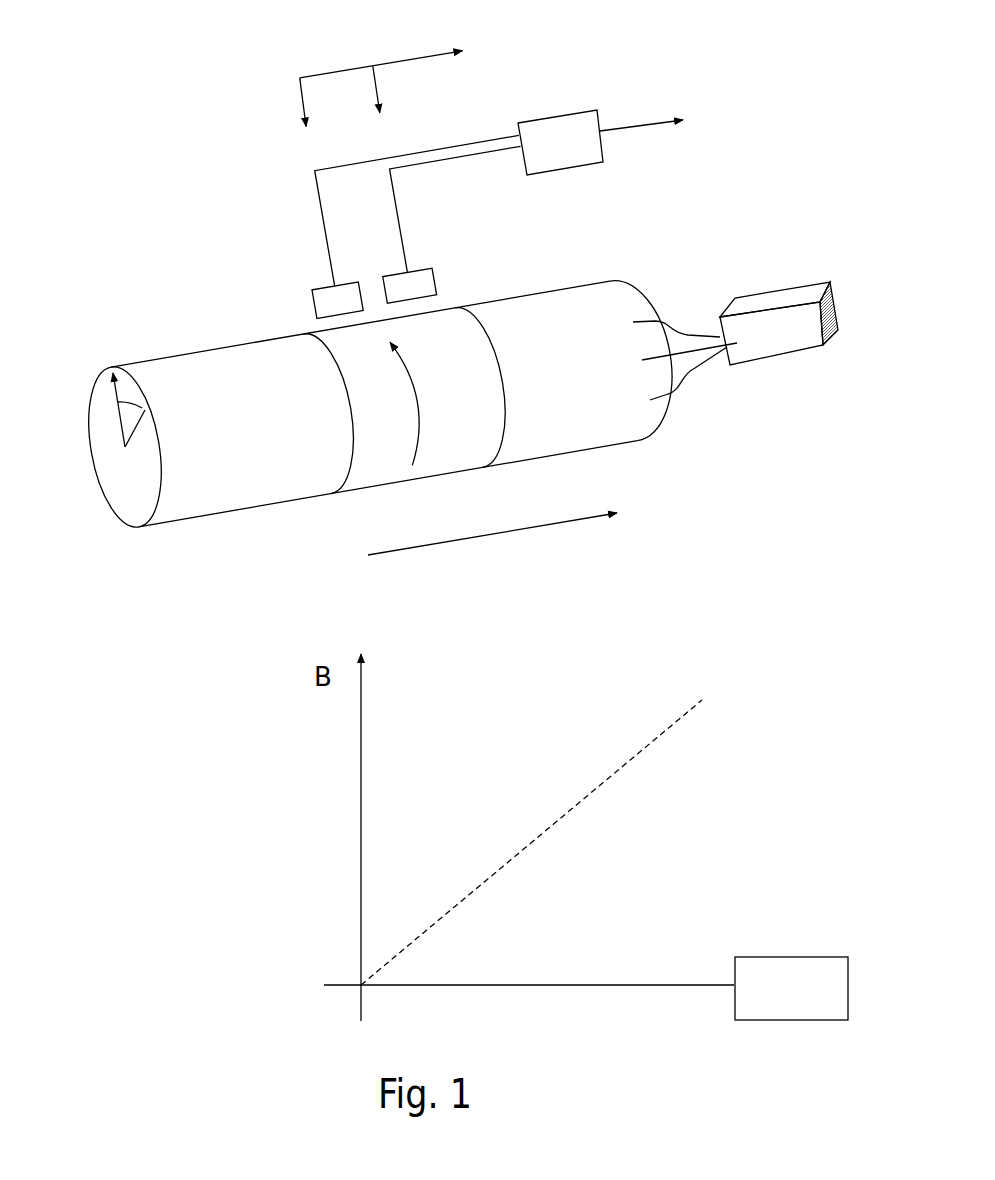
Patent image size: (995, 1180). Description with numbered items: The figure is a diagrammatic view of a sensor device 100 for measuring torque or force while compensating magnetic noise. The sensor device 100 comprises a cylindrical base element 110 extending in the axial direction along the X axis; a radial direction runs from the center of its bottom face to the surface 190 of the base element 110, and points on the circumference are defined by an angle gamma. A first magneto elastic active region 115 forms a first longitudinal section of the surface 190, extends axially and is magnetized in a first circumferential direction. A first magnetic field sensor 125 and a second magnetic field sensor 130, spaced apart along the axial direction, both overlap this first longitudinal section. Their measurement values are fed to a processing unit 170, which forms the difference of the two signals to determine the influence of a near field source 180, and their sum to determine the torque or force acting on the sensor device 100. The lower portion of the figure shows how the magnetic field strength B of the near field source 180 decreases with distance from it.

The sensor device 100 is at (72, 326).
The base element 110 is at (215, 510).
The first magneto elastic active region 115 is at (385, 482).
The first magnetic field sensor 125 is at (312, 305).
The second magnetic field sensor 130 is at (437, 282).
The processing unit 170 is at (565, 113).
The near field source 180 is at (770, 288).
The surface of the base element 190 is at (142, 358).